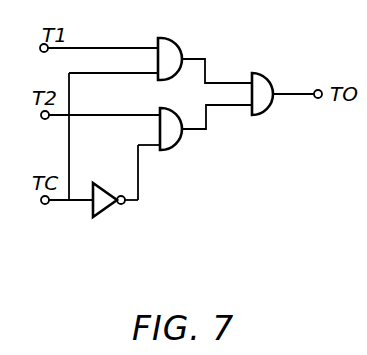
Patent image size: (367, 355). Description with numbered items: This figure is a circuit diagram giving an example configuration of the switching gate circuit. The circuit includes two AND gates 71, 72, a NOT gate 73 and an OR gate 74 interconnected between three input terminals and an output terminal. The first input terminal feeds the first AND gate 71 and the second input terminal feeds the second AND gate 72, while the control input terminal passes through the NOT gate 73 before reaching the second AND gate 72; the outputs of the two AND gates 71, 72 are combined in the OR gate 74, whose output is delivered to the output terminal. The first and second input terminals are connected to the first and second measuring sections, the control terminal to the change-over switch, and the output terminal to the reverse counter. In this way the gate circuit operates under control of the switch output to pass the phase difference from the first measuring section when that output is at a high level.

The AND gate 71 is at (183, 41).
The AND gate 72 is at (184, 136).
The NOT gate 73 is at (108, 210).
The OR gate 74 is at (275, 76).